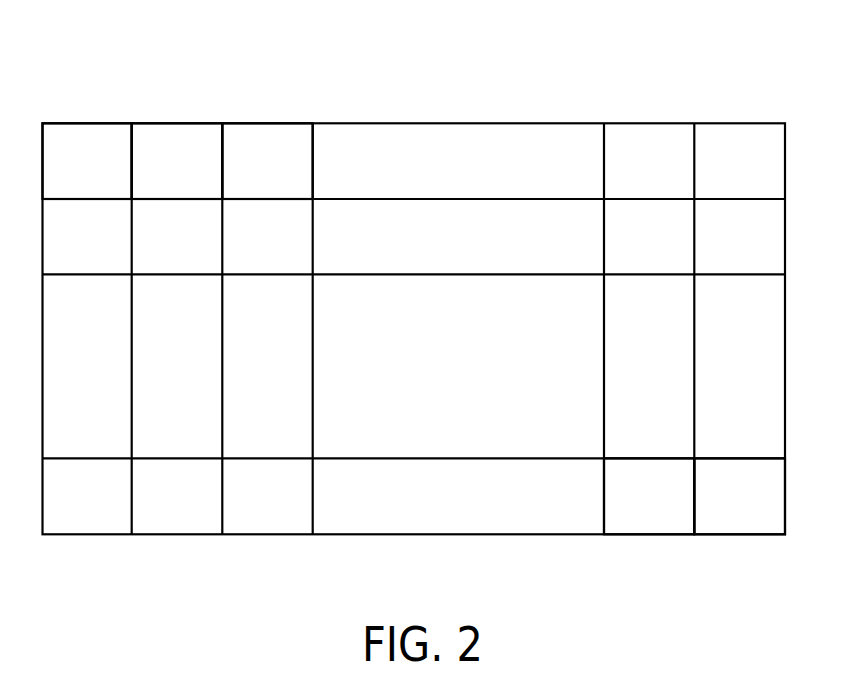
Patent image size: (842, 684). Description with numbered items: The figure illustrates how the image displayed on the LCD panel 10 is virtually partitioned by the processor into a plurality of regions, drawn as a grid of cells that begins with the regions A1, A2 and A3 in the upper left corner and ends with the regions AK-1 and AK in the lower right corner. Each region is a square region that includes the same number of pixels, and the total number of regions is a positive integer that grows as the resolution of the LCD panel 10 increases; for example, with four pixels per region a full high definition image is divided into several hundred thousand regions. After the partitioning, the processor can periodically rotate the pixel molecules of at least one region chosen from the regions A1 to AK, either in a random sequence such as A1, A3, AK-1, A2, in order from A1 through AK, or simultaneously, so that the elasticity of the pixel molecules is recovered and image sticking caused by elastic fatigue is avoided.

The LCD panel 10 is at (444, 142).
The region A1 is at (87, 161).
The region A2 is at (177, 161).
The region A3 is at (267, 161).
The region AK-1 is at (647, 493).
The region AK is at (737, 493).